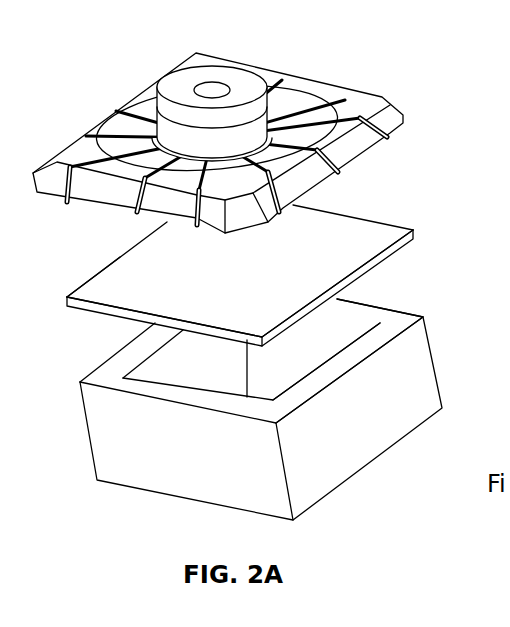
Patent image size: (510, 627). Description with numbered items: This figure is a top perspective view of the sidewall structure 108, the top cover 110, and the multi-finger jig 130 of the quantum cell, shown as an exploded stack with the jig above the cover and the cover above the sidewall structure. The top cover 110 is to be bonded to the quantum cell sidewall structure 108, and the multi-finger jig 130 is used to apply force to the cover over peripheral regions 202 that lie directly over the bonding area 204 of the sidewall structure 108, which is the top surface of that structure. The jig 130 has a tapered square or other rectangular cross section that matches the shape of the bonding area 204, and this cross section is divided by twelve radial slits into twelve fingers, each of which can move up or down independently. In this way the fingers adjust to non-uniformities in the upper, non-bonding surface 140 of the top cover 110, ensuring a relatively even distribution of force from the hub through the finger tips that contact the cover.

The multi-finger jig 130 is at (262, 131).
The top cover 110 is at (353, 213).
The upper (non-bonding) surface 140 is at (240, 283).
The peripheral regions 202 is at (92, 285).
The bonding area 204 is at (394, 318).
The sidewall structure 108 is at (261, 409).